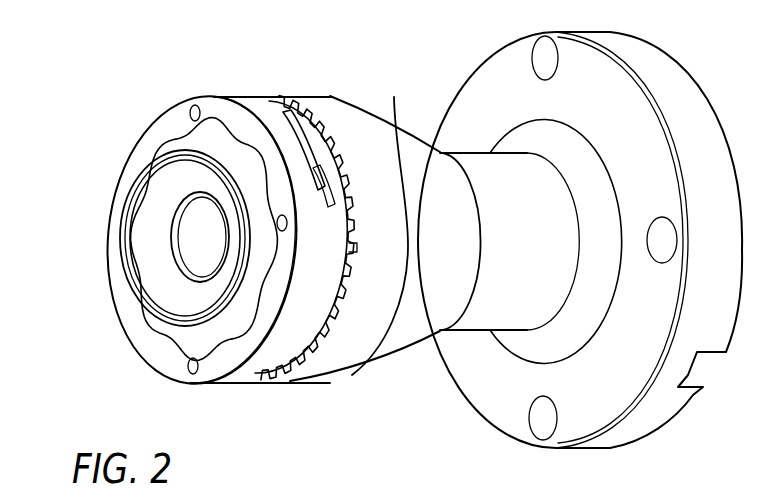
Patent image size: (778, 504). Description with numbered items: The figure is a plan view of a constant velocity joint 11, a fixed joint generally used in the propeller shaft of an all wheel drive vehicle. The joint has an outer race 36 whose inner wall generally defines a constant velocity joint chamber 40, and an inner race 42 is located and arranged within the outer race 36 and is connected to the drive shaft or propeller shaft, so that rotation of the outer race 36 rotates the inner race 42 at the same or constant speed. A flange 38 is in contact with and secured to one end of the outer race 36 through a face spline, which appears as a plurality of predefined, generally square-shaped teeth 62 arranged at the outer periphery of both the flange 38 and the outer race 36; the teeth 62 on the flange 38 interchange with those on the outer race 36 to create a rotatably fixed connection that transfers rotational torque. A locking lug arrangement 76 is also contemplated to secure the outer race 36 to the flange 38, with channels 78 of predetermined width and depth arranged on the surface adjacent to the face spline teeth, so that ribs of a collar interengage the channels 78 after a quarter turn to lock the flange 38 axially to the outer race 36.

The constant velocity joint 11 is at (64, 92).
The outer race 36 is at (258, 99).
The flange 38 is at (394, 98).
The constant velocity joint chamber 40 is at (214, 250).
The inner race 42 is at (168, 284).
The teeth 62 is at (343, 156).
The locking lug arrangement 76 is at (306, 112).
The channels 78 is at (306, 356).